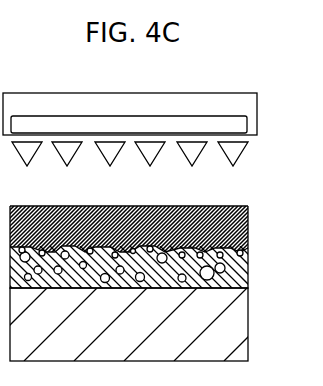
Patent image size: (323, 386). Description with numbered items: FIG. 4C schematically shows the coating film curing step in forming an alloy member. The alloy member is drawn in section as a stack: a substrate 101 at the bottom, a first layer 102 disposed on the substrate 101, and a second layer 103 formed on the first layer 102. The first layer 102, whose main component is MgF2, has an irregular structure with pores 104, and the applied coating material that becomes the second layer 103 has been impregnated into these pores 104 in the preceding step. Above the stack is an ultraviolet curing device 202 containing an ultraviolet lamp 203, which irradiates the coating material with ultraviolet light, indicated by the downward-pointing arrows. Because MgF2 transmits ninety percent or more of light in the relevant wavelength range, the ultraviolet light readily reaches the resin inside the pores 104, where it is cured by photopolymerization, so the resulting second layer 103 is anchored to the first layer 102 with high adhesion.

The substrate 101 is at (240, 325).
The first layer 102 is at (240, 280).
The second layer 103 is at (244, 213).
The pores 104 is at (243, 253).
The ultraviolet curing device 202 is at (215, 100).
The ultraviolet lamp 203 is at (23, 127).